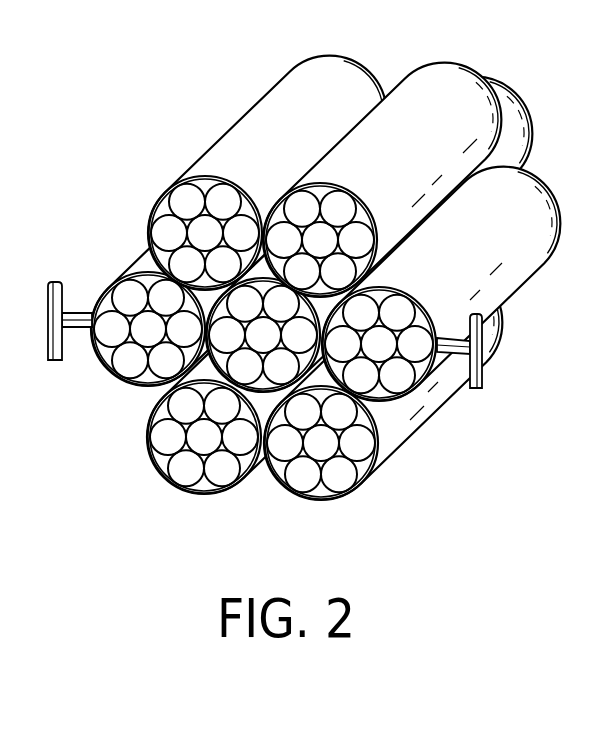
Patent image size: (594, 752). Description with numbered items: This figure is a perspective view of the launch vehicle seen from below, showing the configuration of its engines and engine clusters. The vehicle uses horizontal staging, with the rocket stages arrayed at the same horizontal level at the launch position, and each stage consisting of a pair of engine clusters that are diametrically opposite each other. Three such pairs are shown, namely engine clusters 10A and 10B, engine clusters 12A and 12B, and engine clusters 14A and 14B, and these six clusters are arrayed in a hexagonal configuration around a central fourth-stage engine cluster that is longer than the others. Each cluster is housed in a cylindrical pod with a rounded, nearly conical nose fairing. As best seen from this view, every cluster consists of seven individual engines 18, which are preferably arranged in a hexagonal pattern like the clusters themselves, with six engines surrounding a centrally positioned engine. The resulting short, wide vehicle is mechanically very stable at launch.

The engine cluster 10A is at (298, 144).
The engine cluster 10B is at (408, 446).
The engine cluster 12A is at (410, 173).
The engine cluster 12B is at (150, 452).
The engine cluster 14A is at (487, 256).
The engine cluster 14B is at (127, 383).
The individual engines 18 is at (243, 441).